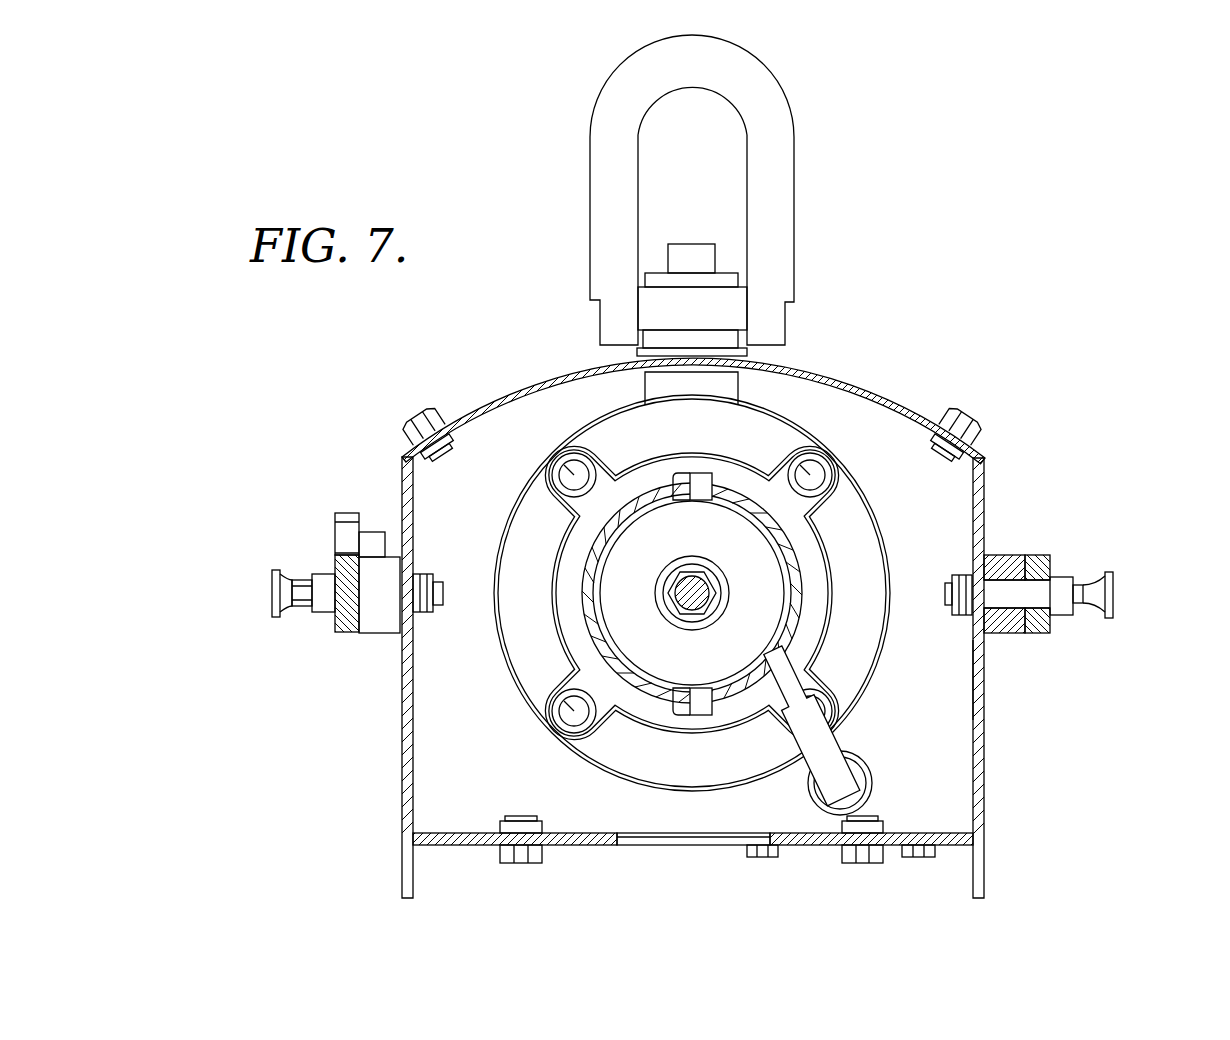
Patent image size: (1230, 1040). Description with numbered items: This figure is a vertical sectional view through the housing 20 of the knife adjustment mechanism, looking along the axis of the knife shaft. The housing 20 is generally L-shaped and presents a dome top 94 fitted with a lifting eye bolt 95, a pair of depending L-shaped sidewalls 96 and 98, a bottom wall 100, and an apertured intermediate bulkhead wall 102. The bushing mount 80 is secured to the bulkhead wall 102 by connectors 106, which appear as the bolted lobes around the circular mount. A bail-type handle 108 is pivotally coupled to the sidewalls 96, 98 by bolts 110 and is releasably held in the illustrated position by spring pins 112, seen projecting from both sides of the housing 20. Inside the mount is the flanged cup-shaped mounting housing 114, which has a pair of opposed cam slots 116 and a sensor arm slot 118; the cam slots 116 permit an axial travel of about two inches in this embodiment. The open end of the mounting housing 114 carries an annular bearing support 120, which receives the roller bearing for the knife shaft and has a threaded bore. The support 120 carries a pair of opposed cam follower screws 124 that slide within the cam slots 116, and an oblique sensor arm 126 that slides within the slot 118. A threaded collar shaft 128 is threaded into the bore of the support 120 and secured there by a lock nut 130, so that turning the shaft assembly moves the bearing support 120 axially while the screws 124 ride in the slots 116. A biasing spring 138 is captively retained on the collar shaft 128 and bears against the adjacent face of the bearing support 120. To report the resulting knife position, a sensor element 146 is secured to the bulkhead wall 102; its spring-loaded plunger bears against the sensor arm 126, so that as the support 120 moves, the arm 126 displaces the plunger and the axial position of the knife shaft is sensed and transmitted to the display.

The housing 20 is at (468, 382).
The bushing mount 80 is at (866, 550).
The dome top 94 is at (876, 378).
The lifting eye bolt 95 is at (778, 123).
The sidewall 96 is at (406, 776).
The sidewall 98 is at (978, 726).
The bottom wall 100 is at (582, 838).
The intermediate bulkhead wall 102 is at (945, 676).
The connectors 106 is at (566, 468).
The bail-type handle 108 is at (337, 562).
The bolts 110 is at (325, 604).
The spring pins 112 is at (272, 594).
The mounting housing 114 is at (588, 626).
The cam slots 116 is at (684, 487).
The sensor arm slot 118 is at (770, 663).
The annular bearing support 120 is at (627, 584).
The cam follower screws 124 is at (706, 482).
The sensor arm 126 is at (828, 755).
The collar shaft 128 is at (686, 586).
The lock nut 130 is at (700, 582).
The biasing spring 138 is at (697, 616).
The sensor element 146 is at (855, 790).